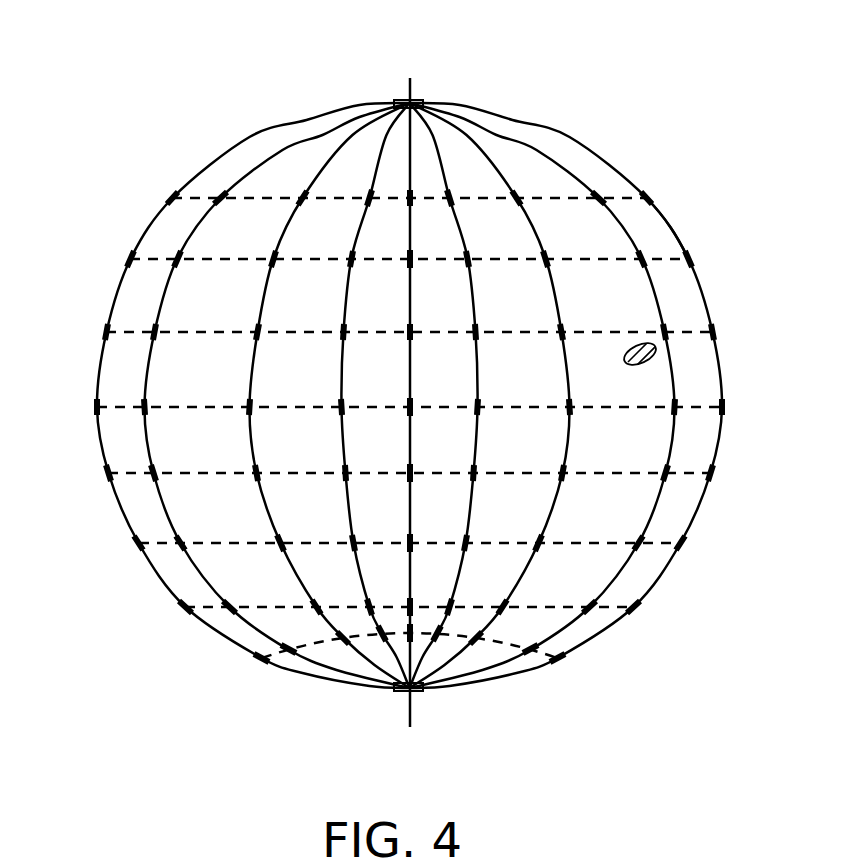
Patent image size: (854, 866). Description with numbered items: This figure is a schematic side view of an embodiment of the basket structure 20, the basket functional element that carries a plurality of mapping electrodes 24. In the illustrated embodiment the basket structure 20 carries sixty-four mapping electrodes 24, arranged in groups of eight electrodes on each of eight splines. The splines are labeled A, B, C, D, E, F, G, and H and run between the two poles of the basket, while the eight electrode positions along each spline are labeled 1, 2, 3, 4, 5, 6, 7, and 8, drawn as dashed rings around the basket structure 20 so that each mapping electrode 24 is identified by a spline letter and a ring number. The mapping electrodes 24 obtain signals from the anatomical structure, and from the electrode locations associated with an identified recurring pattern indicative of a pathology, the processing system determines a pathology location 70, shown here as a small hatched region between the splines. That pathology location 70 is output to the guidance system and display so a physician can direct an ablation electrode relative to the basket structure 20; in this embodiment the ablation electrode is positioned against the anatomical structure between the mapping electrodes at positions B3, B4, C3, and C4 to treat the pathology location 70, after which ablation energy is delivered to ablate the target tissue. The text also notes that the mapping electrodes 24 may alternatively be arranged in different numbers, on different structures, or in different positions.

The basket structure 20 is at (164, 85).
The mapping electrodes 24 is at (690, 257).
The pathology location 70 is at (626, 357).
The first electrode position 1 is at (168, 196).
The second electrode position 2 is at (128, 259).
The third electrode position 3 is at (104, 332).
The fourth electrode position 4 is at (99, 407).
The fifth electrode position 5 is at (106, 475).
The sixth electrode position 6 is at (137, 545).
The seventh electrode position 7 is at (183, 608).
The eighth electrode position 8 is at (262, 660).
The spline A is at (432, 121).
The spline B is at (462, 135).
The spline C is at (532, 143).
The spline D is at (622, 173).
The spline E is at (392, 104).
The spline F is at (358, 103).
The spline G is at (260, 159).
The spline H is at (310, 190).